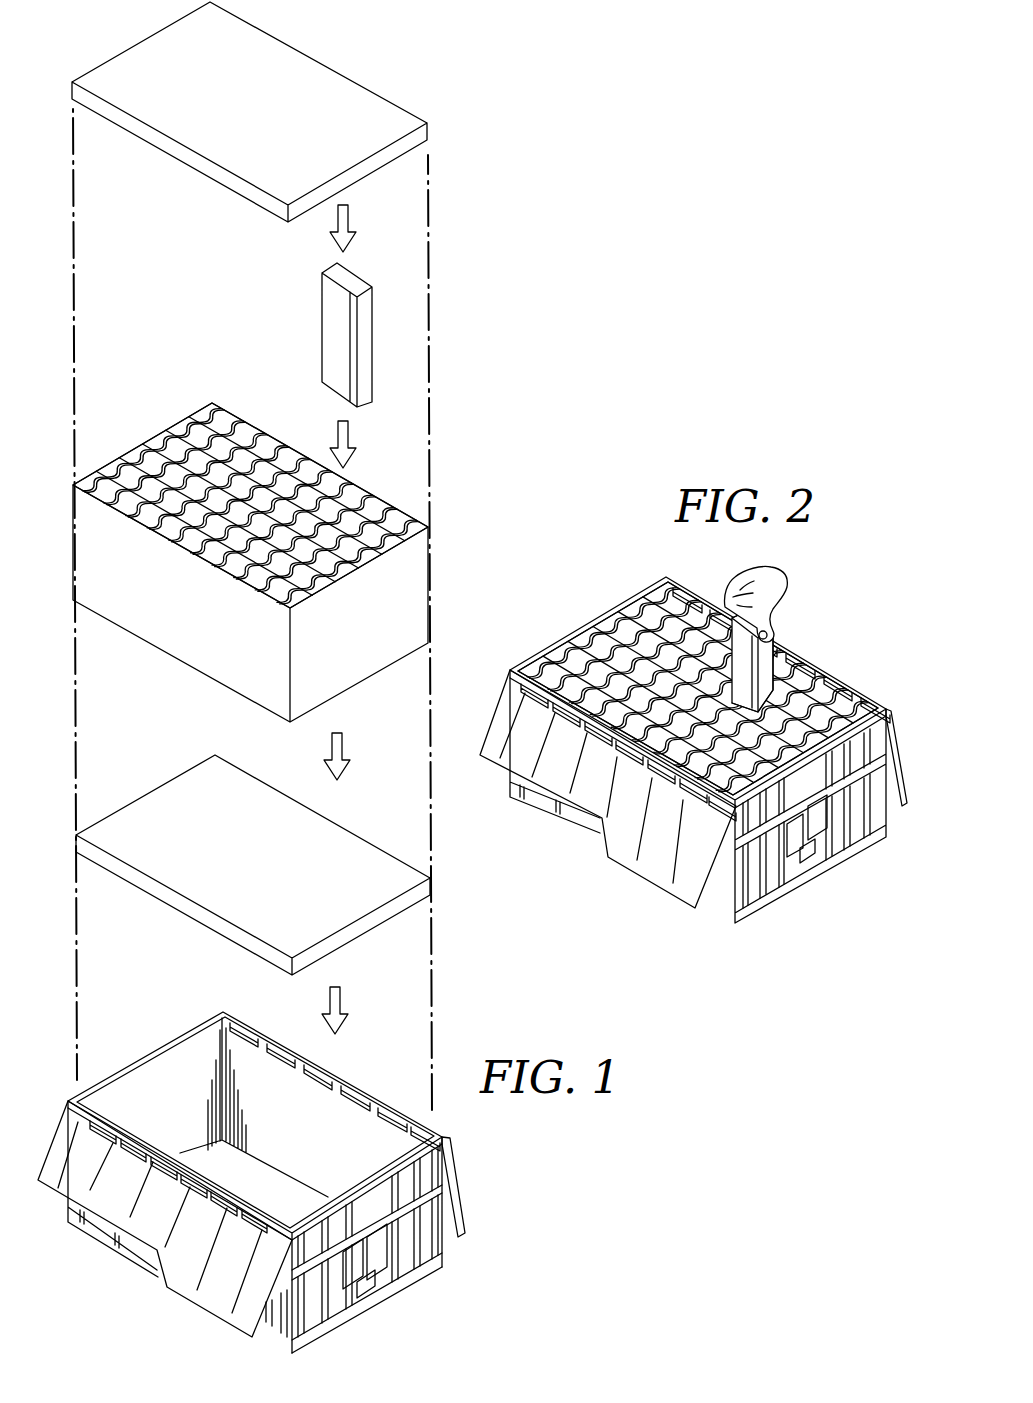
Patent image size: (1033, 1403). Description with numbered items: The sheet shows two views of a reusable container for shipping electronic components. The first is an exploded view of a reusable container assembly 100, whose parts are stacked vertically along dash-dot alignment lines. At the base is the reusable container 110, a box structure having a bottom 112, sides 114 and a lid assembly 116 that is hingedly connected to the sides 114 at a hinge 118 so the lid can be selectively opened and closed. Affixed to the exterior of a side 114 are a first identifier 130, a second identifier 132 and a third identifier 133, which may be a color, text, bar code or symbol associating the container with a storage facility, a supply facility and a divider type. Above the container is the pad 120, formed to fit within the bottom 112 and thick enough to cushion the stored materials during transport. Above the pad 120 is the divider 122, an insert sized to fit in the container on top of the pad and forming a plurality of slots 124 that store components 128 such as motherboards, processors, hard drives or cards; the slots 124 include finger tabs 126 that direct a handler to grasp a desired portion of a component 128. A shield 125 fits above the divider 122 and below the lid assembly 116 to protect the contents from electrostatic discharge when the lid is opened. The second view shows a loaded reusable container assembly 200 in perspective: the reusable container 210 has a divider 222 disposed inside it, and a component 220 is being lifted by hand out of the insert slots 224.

In FIG. 1, the reusable container assembly 100 is at (277, 1188).
In FIG. 1, the reusable container 110 is at (277, 1183).
In FIG. 1, the bottom 112 is at (428, 1276).
In FIG. 1, the sides 114 is at (432, 1242).
In FIG. 1, the lid assembly 116 is at (460, 1184).
In FIG. 1, the hinge 118 is at (381, 1104).
In FIG. 1, the pad 120 is at (148, 796).
In FIG. 1, the divider 122 is at (248, 543).
In FIG. 1, the slots 124 is at (100, 492).
In FIG. 1, the shield 125 is at (130, 56).
In FIG. 1, the finger tabs 126 is at (224, 416).
In FIG. 1, the components 128 is at (318, 328).
In FIG. 1, the first identifier 130 is at (380, 1260).
In FIG. 1, the second identifier 132 is at (347, 1273).
In FIG. 1, the third identifier 133 is at (375, 1292).
In FIG. 2, the reusable container assembly 200 is at (693, 756).
In FIG. 2, the reusable container 210 is at (693, 756).
In FIG. 2, the component 220 is at (776, 626).
In FIG. 2, the divider 222 is at (636, 612).
In FIG. 2, the insert slots 224 is at (548, 672).